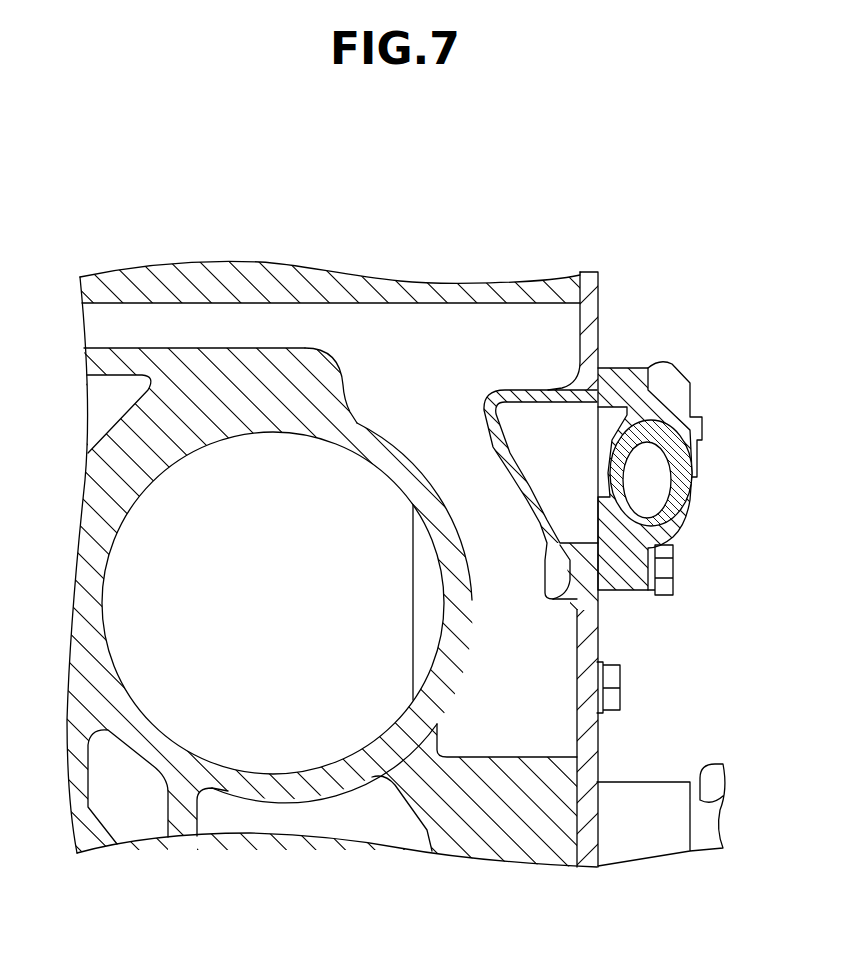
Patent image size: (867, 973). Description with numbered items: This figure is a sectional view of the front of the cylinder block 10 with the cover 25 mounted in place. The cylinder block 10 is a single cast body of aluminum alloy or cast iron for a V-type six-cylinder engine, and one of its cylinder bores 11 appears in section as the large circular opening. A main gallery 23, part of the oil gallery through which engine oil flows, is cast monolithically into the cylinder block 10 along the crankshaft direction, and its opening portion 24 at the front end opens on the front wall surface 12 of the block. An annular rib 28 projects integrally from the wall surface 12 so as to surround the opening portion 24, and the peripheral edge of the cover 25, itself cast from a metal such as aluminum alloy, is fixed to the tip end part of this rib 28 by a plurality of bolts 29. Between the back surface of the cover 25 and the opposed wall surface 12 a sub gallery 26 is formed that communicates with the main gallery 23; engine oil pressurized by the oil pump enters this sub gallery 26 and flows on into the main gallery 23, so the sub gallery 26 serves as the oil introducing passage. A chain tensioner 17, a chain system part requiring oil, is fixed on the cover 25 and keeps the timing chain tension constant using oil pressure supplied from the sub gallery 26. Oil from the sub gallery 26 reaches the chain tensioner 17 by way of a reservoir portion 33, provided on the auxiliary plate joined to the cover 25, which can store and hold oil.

The cylinder block 10 is at (125, 266).
The cylinder bore 11 is at (273, 735).
The wall surface 12 is at (475, 610).
The chain tensioner 17 is at (704, 385).
The main gallery 23 is at (197, 325).
The opening portion 24 is at (322, 330).
The cover 25 is at (598, 308).
The sub gallery 26 is at (445, 423).
The rib 28 is at (560, 292).
The bolt 29 is at (614, 698).
The reservoir portion 33 is at (535, 425).